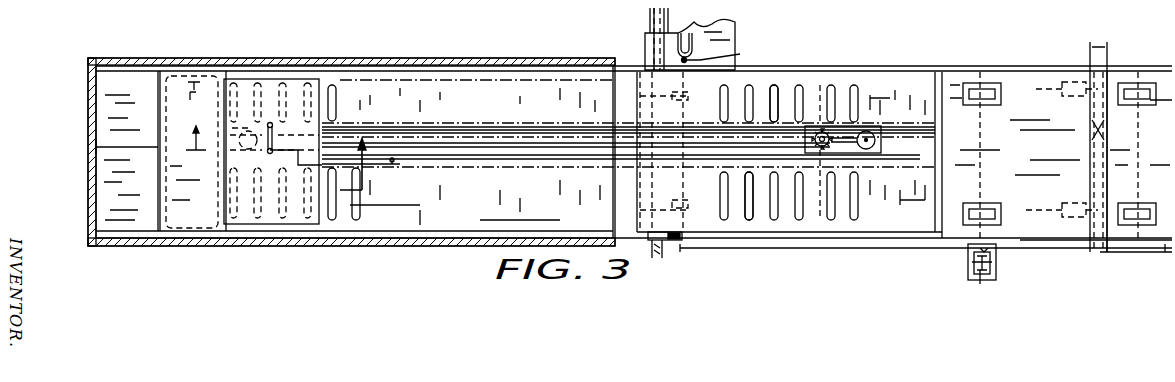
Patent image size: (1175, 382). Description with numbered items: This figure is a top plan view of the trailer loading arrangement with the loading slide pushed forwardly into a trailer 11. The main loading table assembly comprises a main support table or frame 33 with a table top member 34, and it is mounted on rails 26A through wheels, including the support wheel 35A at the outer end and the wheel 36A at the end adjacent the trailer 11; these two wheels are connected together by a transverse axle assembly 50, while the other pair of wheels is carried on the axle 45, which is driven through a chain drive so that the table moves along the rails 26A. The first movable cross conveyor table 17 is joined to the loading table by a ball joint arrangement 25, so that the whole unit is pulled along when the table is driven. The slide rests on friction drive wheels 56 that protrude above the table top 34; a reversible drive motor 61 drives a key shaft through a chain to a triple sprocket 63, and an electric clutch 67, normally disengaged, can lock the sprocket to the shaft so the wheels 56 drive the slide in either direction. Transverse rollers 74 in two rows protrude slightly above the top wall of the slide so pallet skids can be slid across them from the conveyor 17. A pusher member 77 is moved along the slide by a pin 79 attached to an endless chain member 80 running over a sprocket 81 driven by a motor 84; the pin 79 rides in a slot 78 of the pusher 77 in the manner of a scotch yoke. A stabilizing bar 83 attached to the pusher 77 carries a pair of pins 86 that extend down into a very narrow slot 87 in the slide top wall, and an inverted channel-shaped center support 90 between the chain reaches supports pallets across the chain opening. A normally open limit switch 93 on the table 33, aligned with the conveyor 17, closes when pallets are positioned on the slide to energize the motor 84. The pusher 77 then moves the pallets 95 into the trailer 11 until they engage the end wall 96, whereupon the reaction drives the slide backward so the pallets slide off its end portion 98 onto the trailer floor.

The trailer 11 is at (458, 58).
The first movable cross conveyor table 17 is at (727, 36).
The ball joint arrangement 25 is at (740, 52).
The rails 26A is at (1098, 44).
The main support table 33 is at (886, 238).
The table top member 34 is at (954, 78).
The support wheel 35A is at (1108, 70).
The wheel 36A is at (648, 82).
The axle 45 is at (1058, 218).
The transverse axle assembly 50 is at (1086, 82).
The friction drive wheels 56 is at (978, 88).
The reversible drive motor 61 is at (972, 272).
The triple sprocket 63 is at (992, 258).
The electric clutch 67 is at (982, 278).
The transverse rollers 74 is at (778, 86).
The pusher member 77 is at (313, 80).
The slot 78 is at (276, 128).
The pin 79 is at (270, 153).
The endless chain member 80 is at (826, 133).
The sprocket 81 is at (820, 132).
The stabilizing bar 83 is at (392, 166).
The motor 84 is at (868, 132).
The pins 86 is at (330, 160).
The slot 87 is at (892, 160).
The center support 90 is at (498, 132).
The limit switch 93 is at (670, 240).
The pallets 95 is at (120, 92).
The end wall 96 is at (96, 147).
The end portion 98 is at (182, 74).